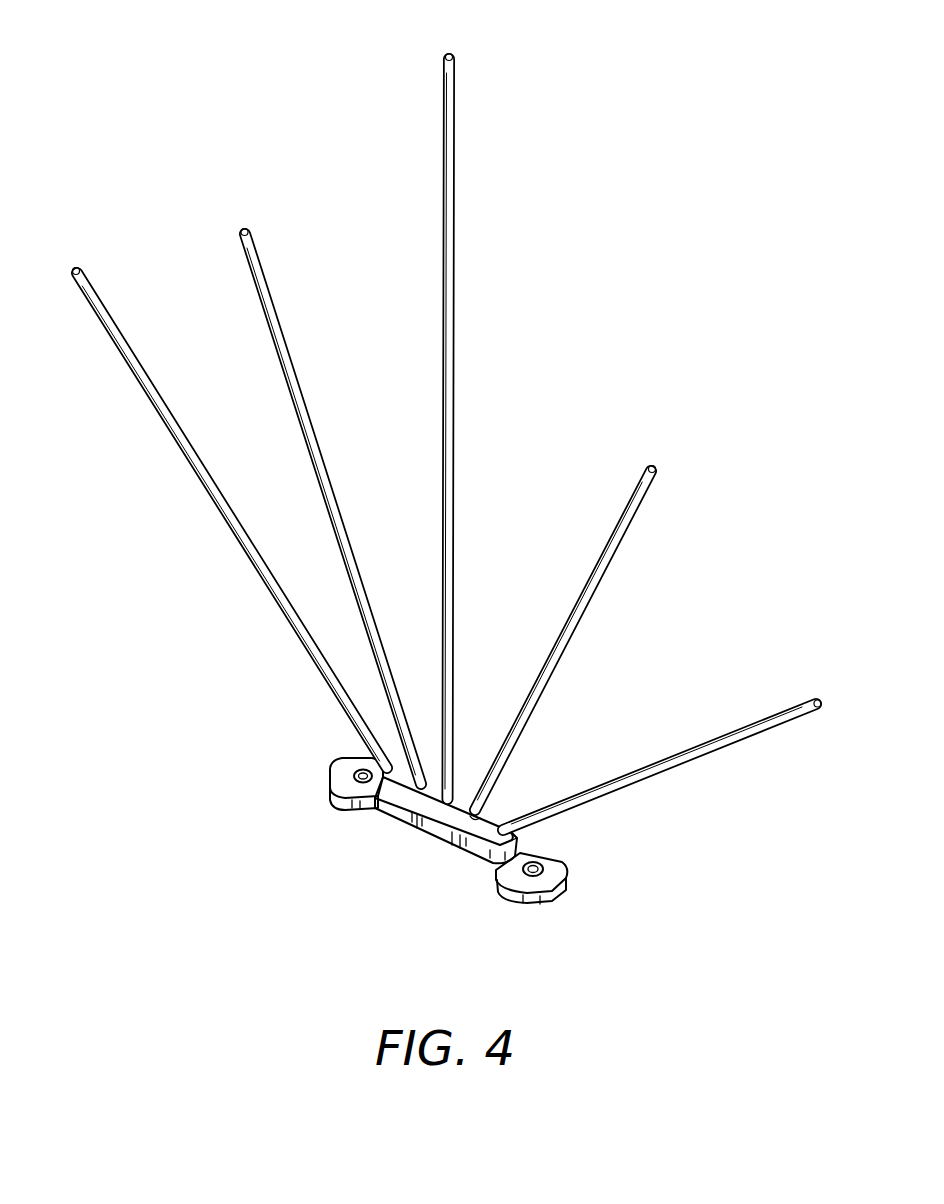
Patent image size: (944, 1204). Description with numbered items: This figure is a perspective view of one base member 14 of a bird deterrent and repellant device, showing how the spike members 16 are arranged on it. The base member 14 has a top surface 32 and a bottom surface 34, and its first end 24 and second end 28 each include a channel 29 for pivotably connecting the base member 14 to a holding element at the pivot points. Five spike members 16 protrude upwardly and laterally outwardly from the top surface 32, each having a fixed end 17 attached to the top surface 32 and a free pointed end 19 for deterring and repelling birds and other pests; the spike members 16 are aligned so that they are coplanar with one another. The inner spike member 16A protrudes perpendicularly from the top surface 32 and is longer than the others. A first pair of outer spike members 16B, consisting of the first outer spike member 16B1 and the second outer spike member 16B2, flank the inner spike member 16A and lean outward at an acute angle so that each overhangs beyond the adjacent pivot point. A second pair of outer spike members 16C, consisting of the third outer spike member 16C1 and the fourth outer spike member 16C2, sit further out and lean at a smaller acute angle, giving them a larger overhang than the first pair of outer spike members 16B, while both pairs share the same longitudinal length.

The base member 14 is at (433, 803).
The spike members 16 is at (448, 434).
The inner spike member 16A is at (468, 404).
The first pair of outer spike members 16B is at (448, 520).
The first outer spike member 16B1 is at (312, 290).
The second outer spike member 16B2 is at (620, 515).
The second pair of outer spike members 16C is at (448, 563).
The third outer spike member 16C1 is at (178, 350).
The fourth outer spike member 16C2 is at (733, 740).
The fixed end 17 is at (425, 812).
The free pointed end 19 is at (447, 52).
The first end 24 is at (340, 772).
The second end 28 is at (558, 868).
The channel 29 is at (358, 770).
The top surface 32 is at (492, 805).
The bottom surface 34 is at (455, 857).